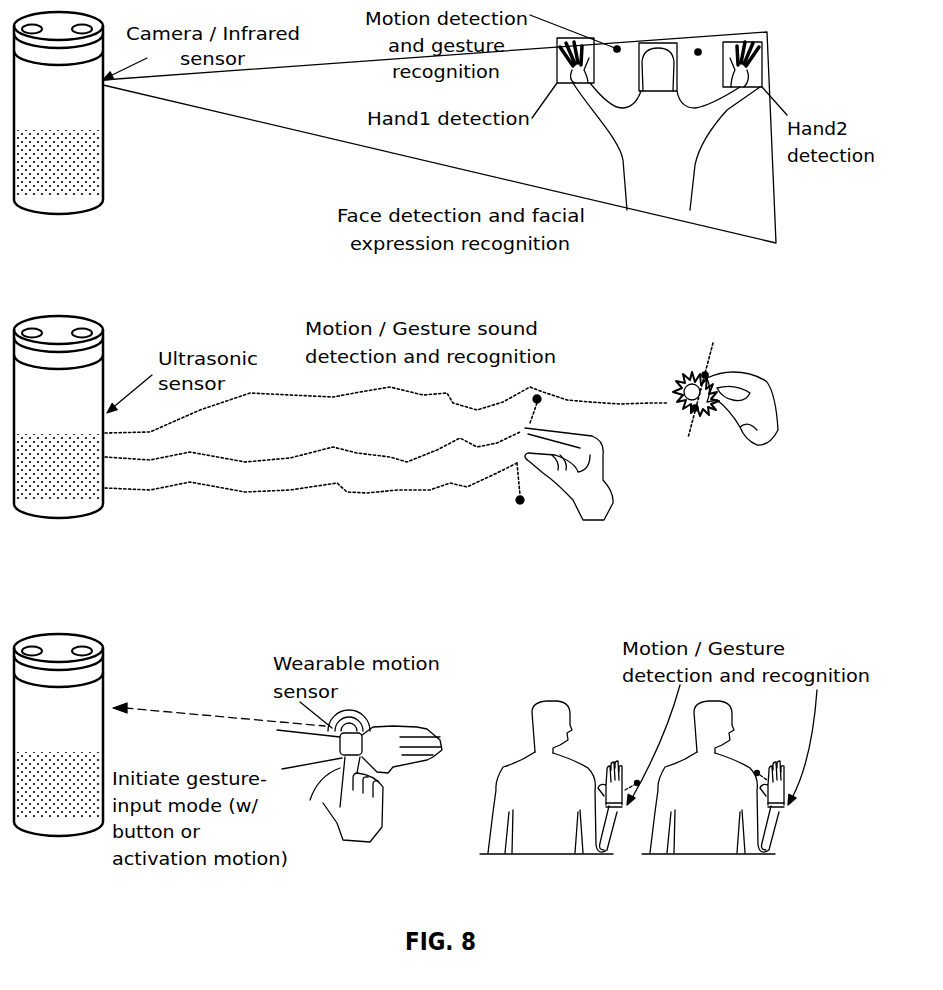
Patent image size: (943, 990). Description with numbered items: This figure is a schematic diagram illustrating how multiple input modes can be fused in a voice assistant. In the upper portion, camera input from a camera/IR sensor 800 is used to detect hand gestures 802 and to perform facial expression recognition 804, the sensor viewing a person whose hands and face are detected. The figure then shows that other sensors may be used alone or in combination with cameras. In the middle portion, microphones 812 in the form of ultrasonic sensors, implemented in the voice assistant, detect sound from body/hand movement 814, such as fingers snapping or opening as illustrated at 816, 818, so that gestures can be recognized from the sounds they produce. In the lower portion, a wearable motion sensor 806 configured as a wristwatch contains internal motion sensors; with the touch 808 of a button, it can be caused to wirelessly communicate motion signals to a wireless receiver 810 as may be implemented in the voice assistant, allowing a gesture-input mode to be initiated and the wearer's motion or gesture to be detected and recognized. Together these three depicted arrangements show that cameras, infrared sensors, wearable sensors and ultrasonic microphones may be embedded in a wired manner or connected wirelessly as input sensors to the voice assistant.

The camera/IR sensor 800 is at (103, 160).
The hand gestures 802 is at (563, 84).
The facial expression recognition 804 is at (653, 90).
The wearable motion sensor 806 is at (360, 740).
The touch of a button 808 is at (339, 799).
The wireless receiver 810 is at (103, 665).
The microphone 812 is at (103, 347).
The body/hand movement 814 is at (660, 377).
The fingers snapping 816 is at (717, 360).
The fingers opening 818 is at (540, 525).